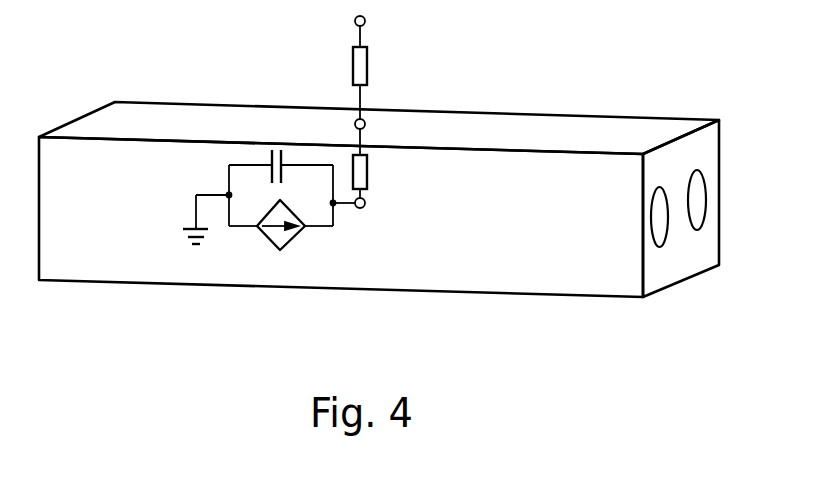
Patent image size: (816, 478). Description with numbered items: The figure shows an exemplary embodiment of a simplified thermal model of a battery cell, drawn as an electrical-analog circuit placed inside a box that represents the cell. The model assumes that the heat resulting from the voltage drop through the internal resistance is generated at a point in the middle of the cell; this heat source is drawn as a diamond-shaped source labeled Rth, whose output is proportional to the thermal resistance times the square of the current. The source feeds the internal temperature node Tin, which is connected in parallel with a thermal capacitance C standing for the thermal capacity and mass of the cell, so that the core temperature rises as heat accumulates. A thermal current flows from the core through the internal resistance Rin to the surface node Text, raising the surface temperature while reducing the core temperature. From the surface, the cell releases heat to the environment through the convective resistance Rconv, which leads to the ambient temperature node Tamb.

The ambient temperature node Tamb is at (387, 26).
The convective thermal resistance Rconv is at (395, 83).
The external temperature node Text is at (383, 133).
The internal thermal resistance Rin is at (379, 176).
The internal temperature node Tin is at (363, 221).
The thermal capacitance C is at (293, 169).
The heat source Rth i1^2 Rth is at (307, 242).